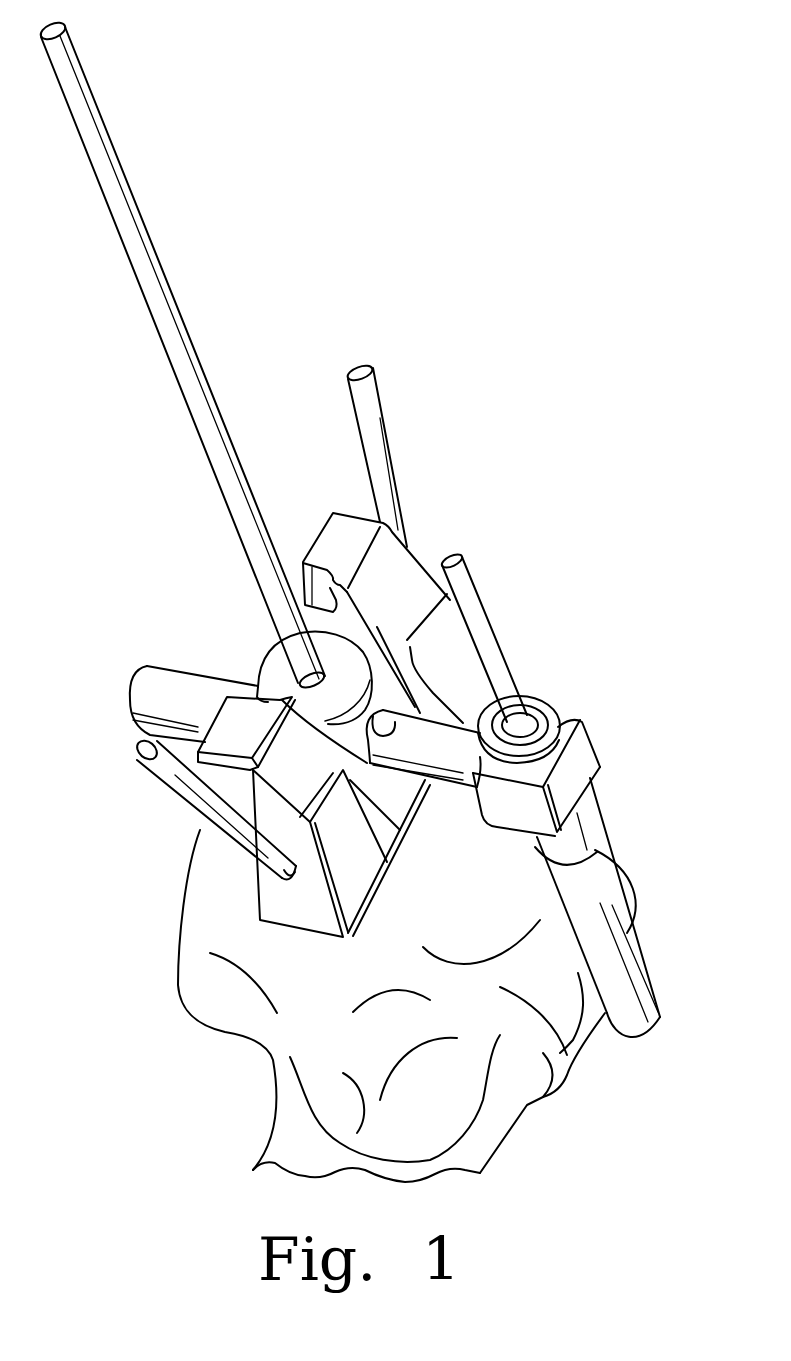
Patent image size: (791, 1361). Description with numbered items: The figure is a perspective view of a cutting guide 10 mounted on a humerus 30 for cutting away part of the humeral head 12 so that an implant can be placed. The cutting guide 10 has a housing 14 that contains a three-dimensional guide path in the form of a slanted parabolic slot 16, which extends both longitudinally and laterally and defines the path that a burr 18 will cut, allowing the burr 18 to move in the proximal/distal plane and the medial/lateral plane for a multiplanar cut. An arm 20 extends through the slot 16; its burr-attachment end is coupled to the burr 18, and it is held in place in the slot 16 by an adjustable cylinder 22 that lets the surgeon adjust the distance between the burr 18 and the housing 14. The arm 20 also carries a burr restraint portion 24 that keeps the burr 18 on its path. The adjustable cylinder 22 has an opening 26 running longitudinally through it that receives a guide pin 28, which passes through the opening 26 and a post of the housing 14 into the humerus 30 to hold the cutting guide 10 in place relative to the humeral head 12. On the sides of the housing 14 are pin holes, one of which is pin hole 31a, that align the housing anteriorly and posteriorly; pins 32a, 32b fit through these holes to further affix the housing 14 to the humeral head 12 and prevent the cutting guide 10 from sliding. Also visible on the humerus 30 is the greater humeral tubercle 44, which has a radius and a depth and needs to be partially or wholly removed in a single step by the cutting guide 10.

The cutting guide 10 is at (588, 552).
The humeral head 12 is at (545, 1100).
The housing 14 is at (403, 541).
The slanted parabolic slot 16 is at (384, 634).
The burr 18 is at (640, 962).
The arm 20 is at (155, 672).
The adjustable cylinder 22 is at (276, 666).
The burr restraint portion 24 is at (597, 742).
The opening 26 is at (328, 656).
The guide pin 28 is at (170, 294).
The humerus 30 is at (486, 1165).
The pin hole 31a is at (274, 877).
The pin 32a is at (176, 782).
The pin 32b is at (386, 418).
The greater humeral tubercle 44 is at (578, 1047).